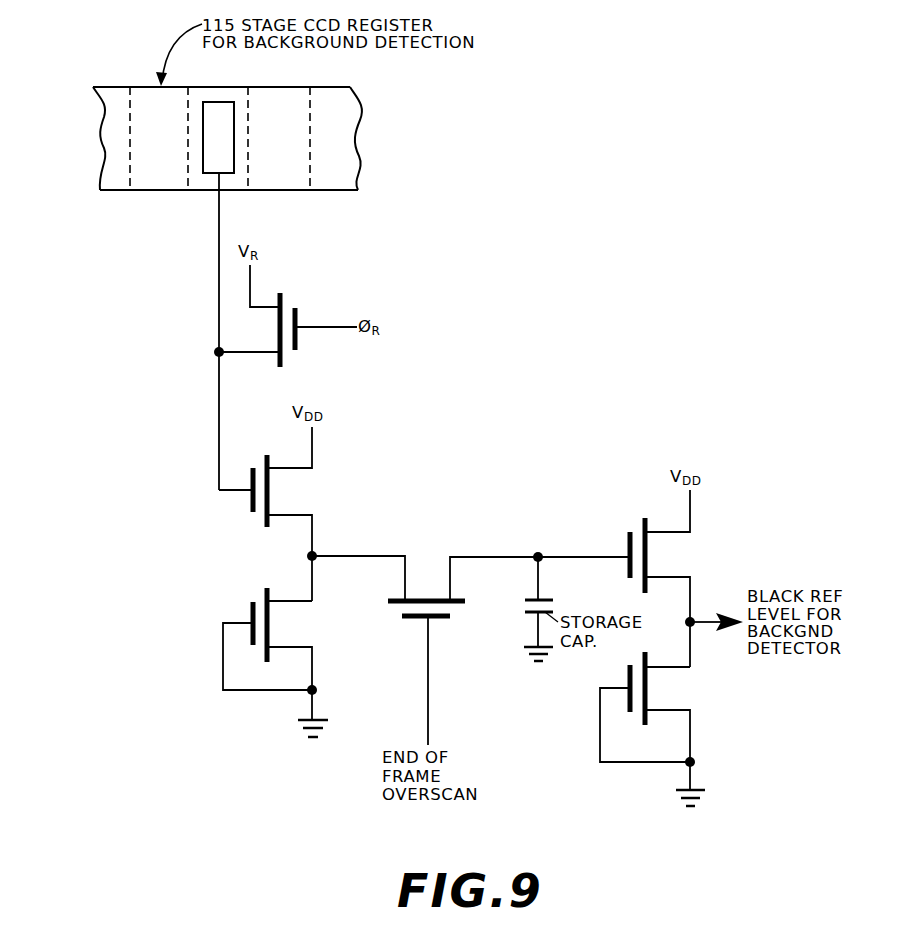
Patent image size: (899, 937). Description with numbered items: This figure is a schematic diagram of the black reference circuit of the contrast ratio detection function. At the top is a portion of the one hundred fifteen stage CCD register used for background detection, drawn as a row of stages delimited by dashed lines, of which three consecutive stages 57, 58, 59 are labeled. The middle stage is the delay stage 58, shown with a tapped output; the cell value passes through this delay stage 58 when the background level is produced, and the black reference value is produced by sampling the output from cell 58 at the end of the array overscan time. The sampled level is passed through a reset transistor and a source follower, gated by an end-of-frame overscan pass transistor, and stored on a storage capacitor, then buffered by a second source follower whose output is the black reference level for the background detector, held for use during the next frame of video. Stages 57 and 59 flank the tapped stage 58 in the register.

The CCD register stage 57 is at (159, 138).
The delay stage 58 is at (218, 137).
The CCD register stage 59 is at (279, 138).